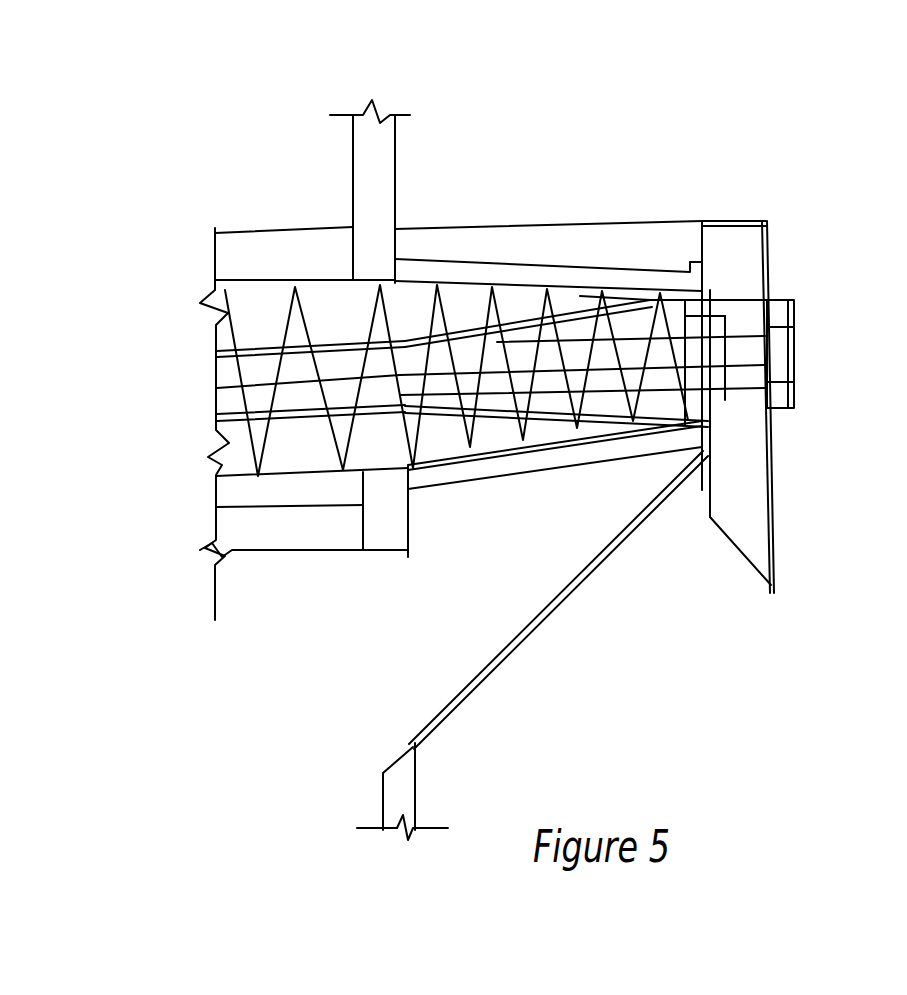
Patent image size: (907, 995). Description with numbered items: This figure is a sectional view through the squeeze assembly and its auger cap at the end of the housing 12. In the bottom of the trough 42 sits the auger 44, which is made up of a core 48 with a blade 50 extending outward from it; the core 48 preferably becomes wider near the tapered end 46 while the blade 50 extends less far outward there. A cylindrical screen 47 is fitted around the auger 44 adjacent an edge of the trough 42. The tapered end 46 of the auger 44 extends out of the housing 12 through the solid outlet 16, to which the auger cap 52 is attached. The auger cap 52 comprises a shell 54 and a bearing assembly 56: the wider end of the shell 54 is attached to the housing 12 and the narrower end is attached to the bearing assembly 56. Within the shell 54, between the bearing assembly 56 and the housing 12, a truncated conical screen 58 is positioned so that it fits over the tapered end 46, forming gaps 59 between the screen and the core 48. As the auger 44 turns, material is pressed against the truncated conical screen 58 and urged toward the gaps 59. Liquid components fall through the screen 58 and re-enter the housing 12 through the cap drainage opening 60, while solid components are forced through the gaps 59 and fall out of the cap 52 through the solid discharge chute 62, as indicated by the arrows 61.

The housing 12 is at (376, 148).
The solid outlet 16 is at (420, 295).
The trough 42 is at (296, 545).
The auger 44 is at (256, 321).
The tapered end 46 is at (575, 285).
The cylindrical screen 47 is at (276, 278).
The core 48 is at (522, 282).
The blade 50 is at (500, 290).
The auger cap 52 is at (778, 162).
The shell 54 is at (611, 552).
The bearing assembly 56 is at (796, 300).
The truncated conical screen 58 is at (527, 458).
The gaps 59 is at (725, 291).
The cap drainage opening 60 is at (375, 677).
The arrows 61 is at (737, 312).
The solid discharge chute 62 is at (773, 503).